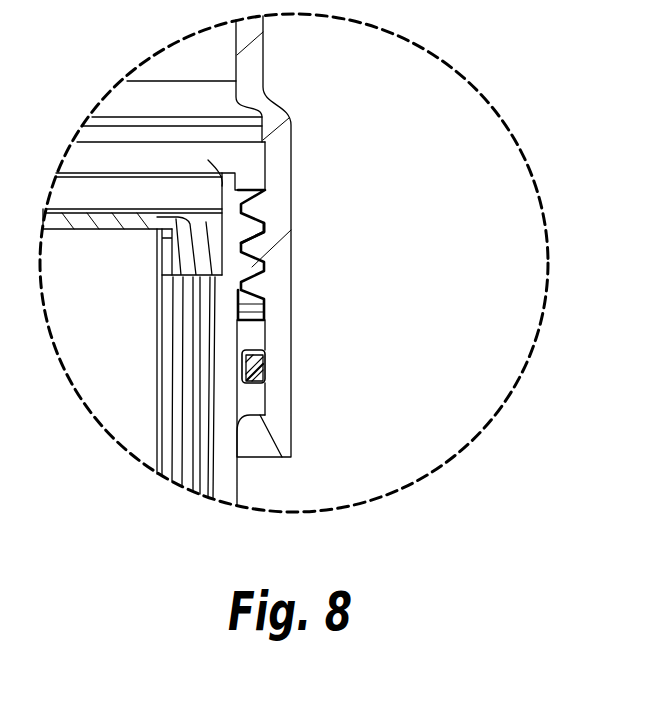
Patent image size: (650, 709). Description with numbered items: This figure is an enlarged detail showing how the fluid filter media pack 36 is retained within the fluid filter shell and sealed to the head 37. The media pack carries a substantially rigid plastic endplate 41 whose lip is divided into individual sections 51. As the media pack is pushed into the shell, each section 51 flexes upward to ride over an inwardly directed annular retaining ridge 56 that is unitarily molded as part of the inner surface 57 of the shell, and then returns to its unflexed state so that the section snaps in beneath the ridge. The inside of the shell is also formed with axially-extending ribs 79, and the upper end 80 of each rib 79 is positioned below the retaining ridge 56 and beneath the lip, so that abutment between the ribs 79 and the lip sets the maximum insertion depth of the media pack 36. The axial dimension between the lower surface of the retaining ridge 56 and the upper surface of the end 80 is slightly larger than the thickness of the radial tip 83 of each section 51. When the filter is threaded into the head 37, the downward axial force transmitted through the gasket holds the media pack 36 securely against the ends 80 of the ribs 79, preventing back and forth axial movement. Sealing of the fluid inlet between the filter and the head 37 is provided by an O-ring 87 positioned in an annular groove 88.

The fluid filter media pack 36 is at (108, 355).
The head 37 is at (247, 50).
The endplate 41 is at (90, 216).
The sections 51 is at (200, 259).
The retaining ridge 56 is at (262, 214).
The inner surface 57 is at (222, 188).
The ribs 79 is at (183, 320).
The upper end 80 is at (163, 262).
The radial tip 83 is at (240, 254).
The O-ring 87 is at (262, 374).
The annular groove 88 is at (265, 362).